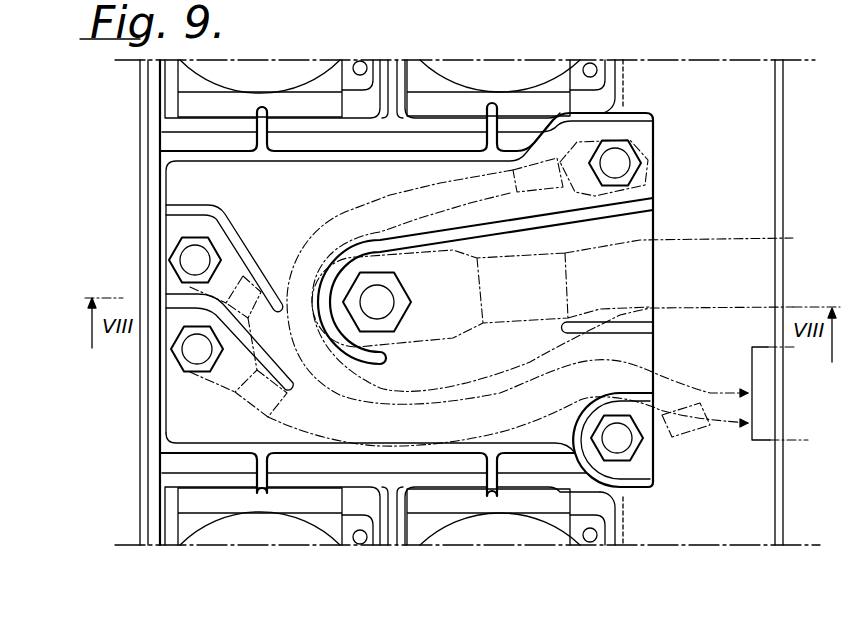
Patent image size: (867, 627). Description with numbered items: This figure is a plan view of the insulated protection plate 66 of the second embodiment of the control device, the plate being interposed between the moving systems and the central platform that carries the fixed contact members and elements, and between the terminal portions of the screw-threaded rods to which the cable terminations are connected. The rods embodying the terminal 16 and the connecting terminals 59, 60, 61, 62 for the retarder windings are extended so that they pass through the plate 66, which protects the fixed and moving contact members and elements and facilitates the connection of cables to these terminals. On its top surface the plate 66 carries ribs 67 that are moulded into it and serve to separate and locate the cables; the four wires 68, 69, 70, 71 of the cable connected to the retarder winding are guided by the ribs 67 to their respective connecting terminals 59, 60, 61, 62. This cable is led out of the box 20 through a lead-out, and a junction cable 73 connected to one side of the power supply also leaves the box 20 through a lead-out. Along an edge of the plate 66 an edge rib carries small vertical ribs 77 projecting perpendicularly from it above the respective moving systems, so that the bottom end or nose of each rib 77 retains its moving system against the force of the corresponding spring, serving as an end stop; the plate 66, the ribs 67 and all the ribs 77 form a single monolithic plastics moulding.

The terminal 16 is at (378, 302).
The box 20 is at (778, 125).
The connecting terminal 59 is at (617, 165).
The connecting terminal 60 is at (618, 440).
The connecting terminal 61 is at (194, 260).
The connecting terminal 62 is at (196, 350).
The insulated protection plate 66 is at (283, 192).
The ribs 67 is at (248, 335).
The wire 68 is at (353, 212).
The wire 69 is at (260, 386).
The wire 70 is at (693, 380).
The wire 71 is at (693, 437).
The junction cable 73 is at (693, 270).
The vertical ribs 77 is at (262, 127).